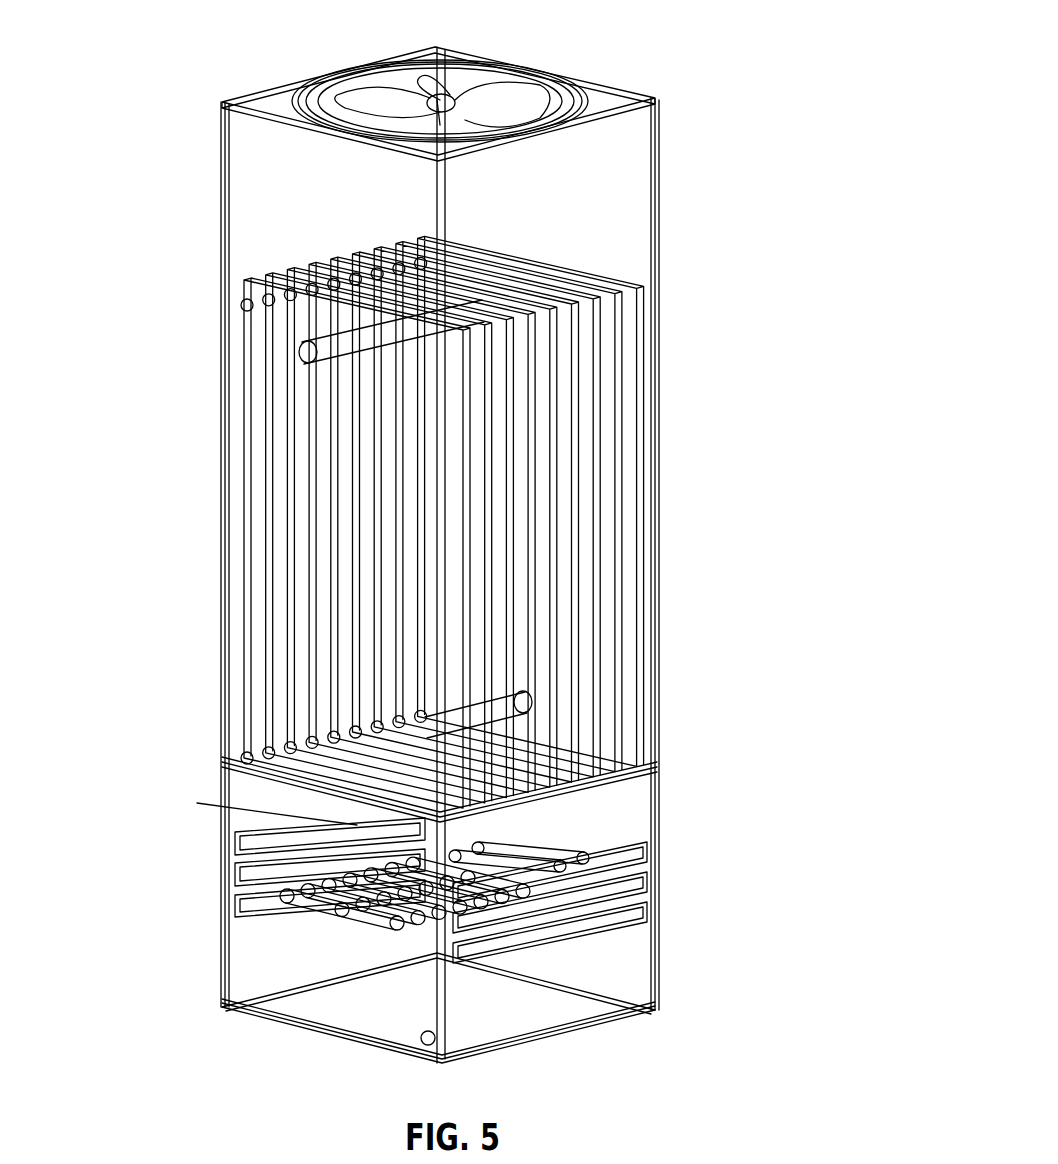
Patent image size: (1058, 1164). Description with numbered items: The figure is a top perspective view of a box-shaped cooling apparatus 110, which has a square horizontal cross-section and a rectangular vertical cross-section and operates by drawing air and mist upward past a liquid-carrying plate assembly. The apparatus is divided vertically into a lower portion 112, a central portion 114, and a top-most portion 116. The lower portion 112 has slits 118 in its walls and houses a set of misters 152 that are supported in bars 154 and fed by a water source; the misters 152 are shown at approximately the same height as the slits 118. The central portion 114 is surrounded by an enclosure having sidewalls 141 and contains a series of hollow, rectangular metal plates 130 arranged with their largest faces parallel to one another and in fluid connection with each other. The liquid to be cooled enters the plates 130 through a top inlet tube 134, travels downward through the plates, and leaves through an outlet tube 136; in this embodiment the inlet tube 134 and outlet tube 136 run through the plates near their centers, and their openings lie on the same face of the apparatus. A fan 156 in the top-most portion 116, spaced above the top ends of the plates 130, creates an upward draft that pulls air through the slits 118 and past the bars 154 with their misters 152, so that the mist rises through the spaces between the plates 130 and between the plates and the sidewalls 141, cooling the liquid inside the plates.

The apparatus 110 is at (673, 196).
The lower portion 112 is at (206, 936).
The central portion 114 is at (665, 555).
The top-most portion 116 is at (220, 143).
The slits 118 is at (572, 927).
The plates 130 is at (250, 281).
The inlet tube 134 is at (300, 356).
The outlet tube 136 is at (245, 752).
The sidewalls 141 is at (290, 208).
The misters 152 is at (395, 925).
The bars 154 is at (337, 915).
The fan 156 is at (565, 73).